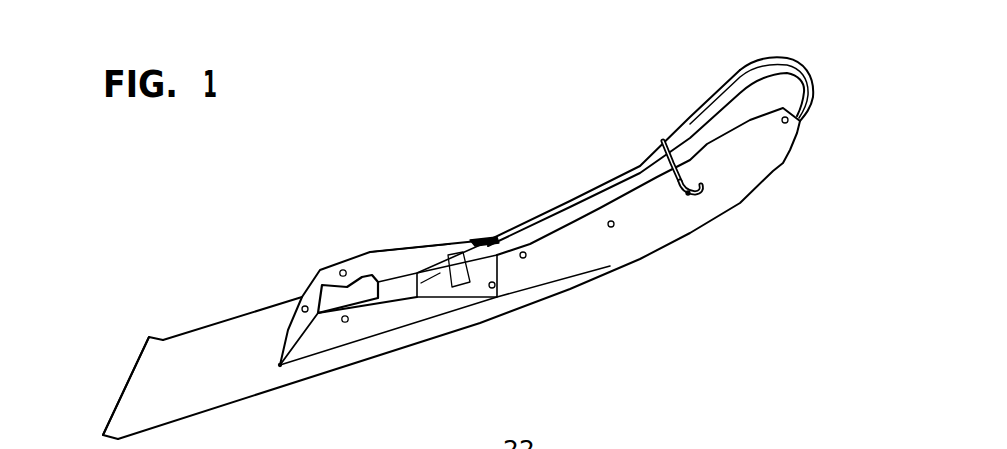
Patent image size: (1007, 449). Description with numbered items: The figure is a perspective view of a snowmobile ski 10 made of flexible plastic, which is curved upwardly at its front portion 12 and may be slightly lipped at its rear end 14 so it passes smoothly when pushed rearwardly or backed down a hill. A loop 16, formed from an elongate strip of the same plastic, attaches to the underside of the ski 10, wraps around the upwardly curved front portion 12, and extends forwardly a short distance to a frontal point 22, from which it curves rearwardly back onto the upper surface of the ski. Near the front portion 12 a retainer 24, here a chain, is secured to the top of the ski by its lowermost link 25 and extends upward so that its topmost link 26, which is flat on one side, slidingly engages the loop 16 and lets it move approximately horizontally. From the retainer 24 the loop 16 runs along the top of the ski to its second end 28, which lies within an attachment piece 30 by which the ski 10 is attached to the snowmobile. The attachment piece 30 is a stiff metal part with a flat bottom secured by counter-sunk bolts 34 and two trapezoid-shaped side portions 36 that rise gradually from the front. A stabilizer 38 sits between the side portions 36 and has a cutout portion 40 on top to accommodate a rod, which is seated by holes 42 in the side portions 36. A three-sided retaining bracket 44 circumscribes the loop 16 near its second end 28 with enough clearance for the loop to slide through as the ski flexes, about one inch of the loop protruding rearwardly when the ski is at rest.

The snowmobile ski 10 is at (542, 150).
The front portion 12 is at (796, 157).
The rear end 14 is at (103, 428).
The loop 16 is at (745, 78).
The frontal point 22 is at (818, 88).
The retainer 24 is at (694, 178).
The lowermost link 25 is at (688, 195).
The topmost link 26 is at (664, 143).
The second end 28 is at (421, 283).
The attachment piece 30 is at (296, 280).
The bolts 34 is at (301, 311).
The side portions 36 is at (408, 251).
The stabilizer 38 is at (281, 363).
The cutout portion 40 is at (357, 290).
The holes 42 is at (339, 268).
The retaining bracket 44 is at (461, 272).